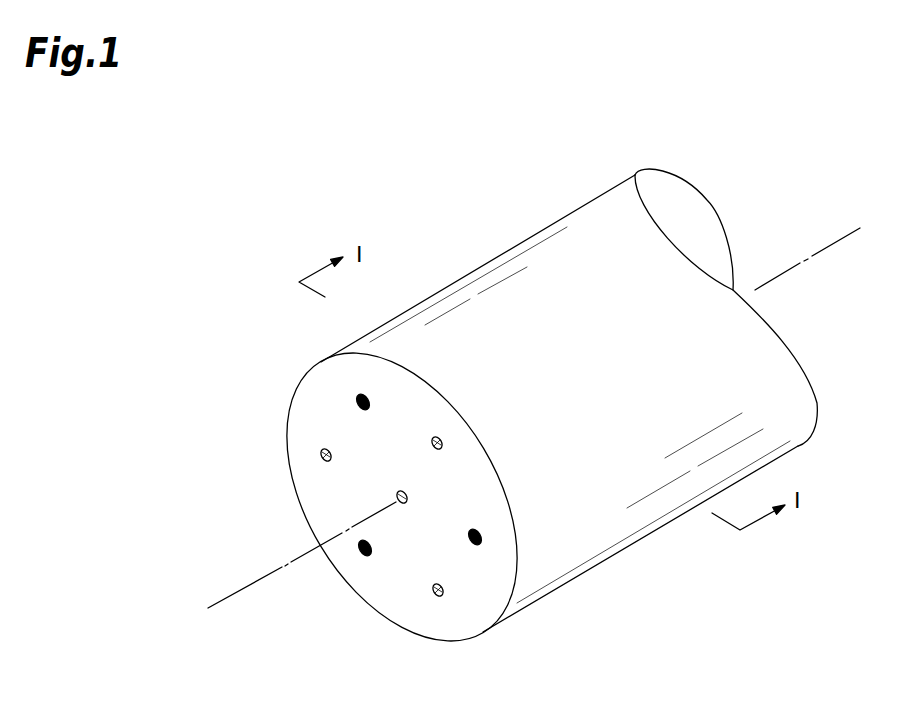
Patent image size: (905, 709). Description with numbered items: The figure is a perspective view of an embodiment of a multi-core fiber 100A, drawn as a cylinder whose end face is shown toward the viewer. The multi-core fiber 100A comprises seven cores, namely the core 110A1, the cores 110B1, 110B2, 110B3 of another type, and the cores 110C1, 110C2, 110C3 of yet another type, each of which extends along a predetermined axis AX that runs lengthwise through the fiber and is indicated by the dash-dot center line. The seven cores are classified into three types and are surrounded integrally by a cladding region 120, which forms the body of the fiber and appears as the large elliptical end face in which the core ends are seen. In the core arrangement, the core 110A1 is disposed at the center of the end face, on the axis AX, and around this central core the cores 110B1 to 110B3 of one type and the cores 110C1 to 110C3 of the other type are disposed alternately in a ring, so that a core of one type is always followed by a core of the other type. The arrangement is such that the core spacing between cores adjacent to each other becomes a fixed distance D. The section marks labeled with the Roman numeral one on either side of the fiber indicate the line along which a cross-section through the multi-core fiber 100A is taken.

The multi-core fiber 100A is at (462, 223).
The cladding region 120 is at (417, 398).
The predetermined axis AX is at (511, 430).
The core 110A1 is at (398, 505).
The core 110B1 is at (439, 598).
The core 110B2 is at (319, 456).
The core 110B3 is at (445, 444).
The core 110C1 is at (361, 553).
The core 110C2 is at (355, 398).
The core 110C3 is at (484, 537).